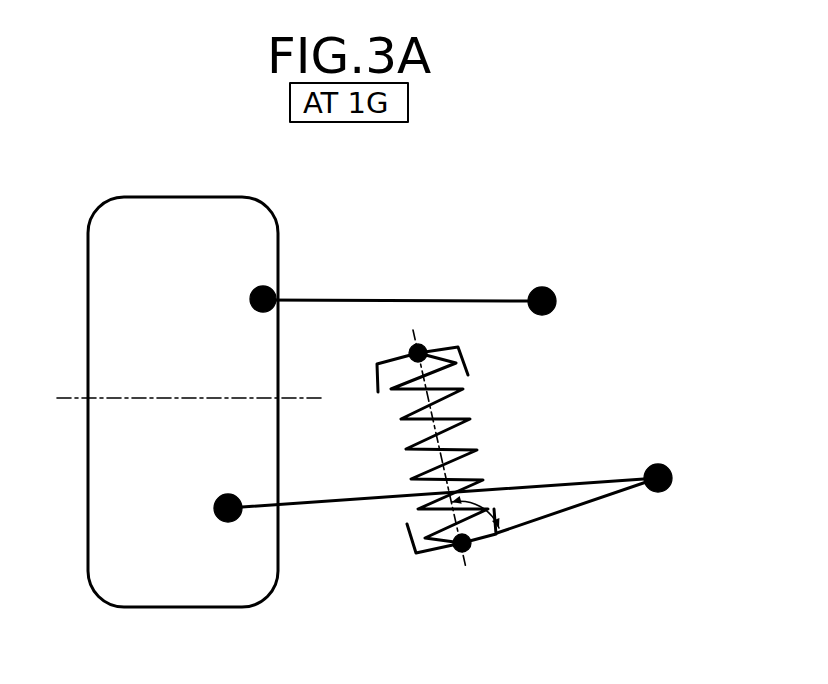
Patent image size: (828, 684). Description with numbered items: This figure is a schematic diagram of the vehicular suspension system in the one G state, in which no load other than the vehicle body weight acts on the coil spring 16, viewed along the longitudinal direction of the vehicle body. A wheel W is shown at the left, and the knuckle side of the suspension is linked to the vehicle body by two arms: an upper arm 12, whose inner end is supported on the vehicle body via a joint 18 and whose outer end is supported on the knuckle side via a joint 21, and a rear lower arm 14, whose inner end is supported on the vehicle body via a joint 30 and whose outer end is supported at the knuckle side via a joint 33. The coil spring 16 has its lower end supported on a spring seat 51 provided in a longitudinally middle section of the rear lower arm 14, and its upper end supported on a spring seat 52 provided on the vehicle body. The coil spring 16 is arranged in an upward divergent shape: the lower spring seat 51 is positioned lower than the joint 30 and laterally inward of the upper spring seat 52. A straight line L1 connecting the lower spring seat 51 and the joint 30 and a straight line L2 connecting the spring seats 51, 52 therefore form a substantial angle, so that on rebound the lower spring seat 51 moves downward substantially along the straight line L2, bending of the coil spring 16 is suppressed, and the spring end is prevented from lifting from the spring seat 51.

The wheel W is at (170, 197).
The upper arm 12 is at (320, 300).
The joint 21 is at (260, 288).
The joint 18 is at (549, 290).
The spring seat 52 is at (410, 349).
The coil spring 16 is at (408, 445).
The straight line L2 is at (440, 457).
The spring seat 51 is at (460, 553).
The rear lower arm 14 is at (524, 485).
The straight line L1 is at (558, 514).
The joint 30 is at (663, 492).
The joint 33 is at (214, 512).